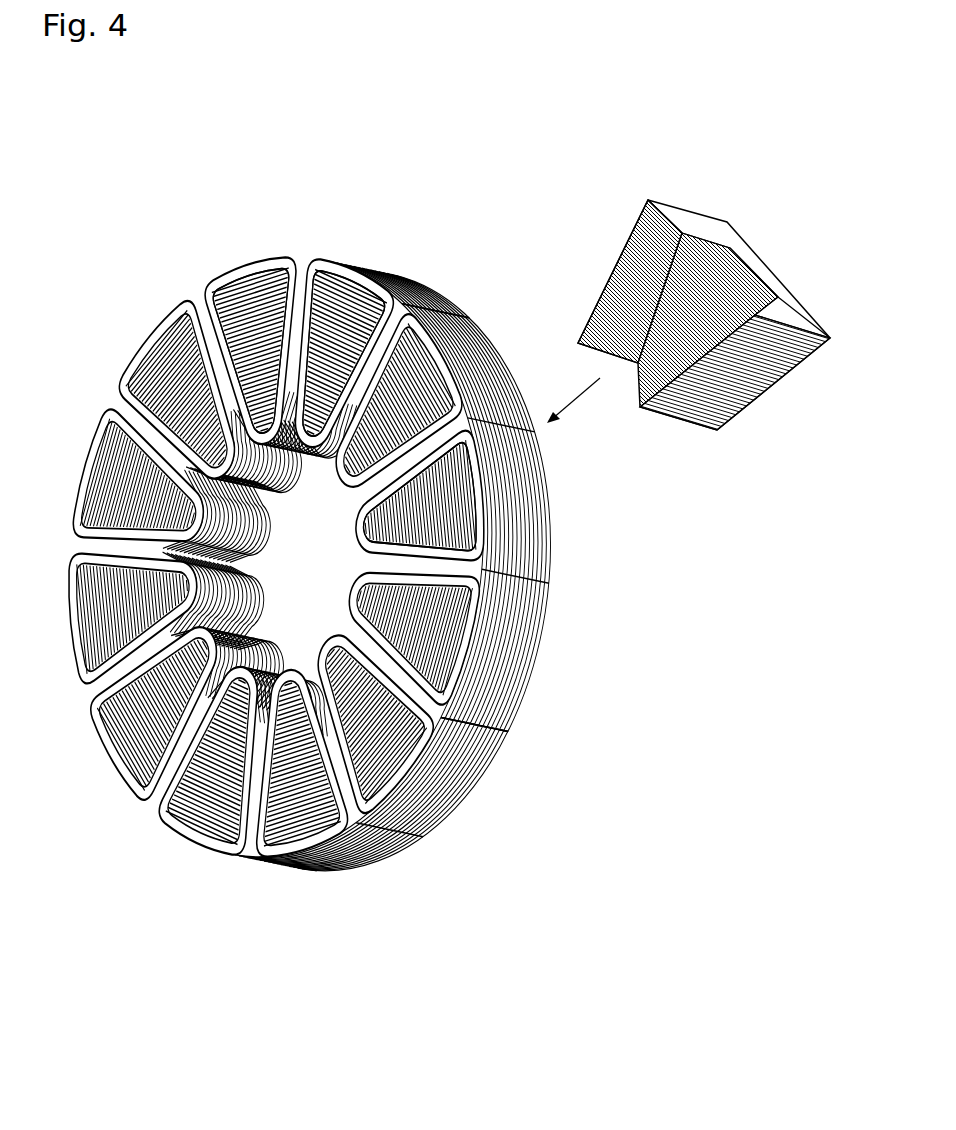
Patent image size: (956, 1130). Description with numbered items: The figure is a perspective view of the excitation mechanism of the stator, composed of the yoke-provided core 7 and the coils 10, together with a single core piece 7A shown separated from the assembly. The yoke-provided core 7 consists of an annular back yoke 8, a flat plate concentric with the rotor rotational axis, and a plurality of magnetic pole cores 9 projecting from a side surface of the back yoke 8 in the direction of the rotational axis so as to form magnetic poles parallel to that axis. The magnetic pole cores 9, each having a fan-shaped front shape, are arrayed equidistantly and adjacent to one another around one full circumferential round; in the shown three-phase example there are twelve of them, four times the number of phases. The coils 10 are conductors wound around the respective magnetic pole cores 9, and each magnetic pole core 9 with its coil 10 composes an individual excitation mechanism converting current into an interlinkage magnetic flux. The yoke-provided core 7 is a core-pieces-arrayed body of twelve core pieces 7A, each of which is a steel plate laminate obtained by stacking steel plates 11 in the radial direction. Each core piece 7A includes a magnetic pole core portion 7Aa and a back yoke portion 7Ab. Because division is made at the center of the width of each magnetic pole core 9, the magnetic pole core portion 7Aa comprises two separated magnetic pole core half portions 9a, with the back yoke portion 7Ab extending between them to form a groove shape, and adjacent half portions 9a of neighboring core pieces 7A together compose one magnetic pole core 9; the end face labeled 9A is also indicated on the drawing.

The yoke-provided core 7 is at (305, 858).
The core piece 7A is at (180, 340).
The magnetic pole core portion 7Aa is at (440, 226).
The back yoke portion 7Ab is at (763, 273).
The back yoke 8 is at (528, 640).
The magnetic pole core 9 is at (510, 683).
The magnetic pole core half portion 9a is at (508, 350).
The tooth end face 9A is at (477, 517).
The coil 10 is at (350, 277).
The steel plate 11 is at (793, 373).